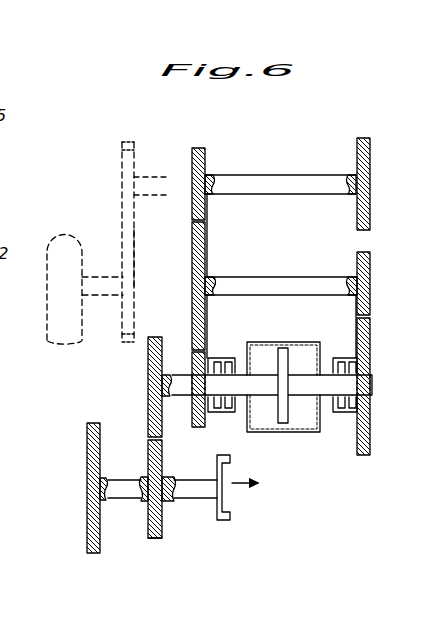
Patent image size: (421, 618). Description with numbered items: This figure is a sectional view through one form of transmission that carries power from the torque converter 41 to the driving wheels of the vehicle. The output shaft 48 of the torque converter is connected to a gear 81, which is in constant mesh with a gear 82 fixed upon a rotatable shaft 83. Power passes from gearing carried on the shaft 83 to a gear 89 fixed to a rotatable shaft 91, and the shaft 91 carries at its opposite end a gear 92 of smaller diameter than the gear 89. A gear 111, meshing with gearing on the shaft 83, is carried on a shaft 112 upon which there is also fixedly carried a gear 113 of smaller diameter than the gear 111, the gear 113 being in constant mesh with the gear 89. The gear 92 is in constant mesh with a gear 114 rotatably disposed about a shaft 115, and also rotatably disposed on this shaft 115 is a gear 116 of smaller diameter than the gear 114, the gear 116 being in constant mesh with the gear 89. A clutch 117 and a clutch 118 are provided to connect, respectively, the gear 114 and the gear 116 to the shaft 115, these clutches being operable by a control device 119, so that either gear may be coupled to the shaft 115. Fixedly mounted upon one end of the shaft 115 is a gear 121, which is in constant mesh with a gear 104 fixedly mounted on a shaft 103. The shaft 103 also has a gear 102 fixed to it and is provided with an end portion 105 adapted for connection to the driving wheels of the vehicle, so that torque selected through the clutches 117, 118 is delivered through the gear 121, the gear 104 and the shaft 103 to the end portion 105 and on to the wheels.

The torque converter 41 is at (67, 231).
The output shaft 48 is at (102, 301).
The gear 81 is at (136, 256).
The gear 82 is at (119, 148).
The rotatable shaft 83 is at (153, 175).
The gear 89 is at (207, 240).
The rotatable shaft 91 is at (284, 280).
The gear 92 is at (370, 263).
The gear 102 is at (88, 529).
The shaft 103 is at (189, 490).
The gear 104 is at (158, 540).
The end portion 105 is at (226, 522).
The gear 111 is at (370, 155).
The shaft 112 is at (284, 178).
The gear 113 is at (201, 147).
The gear 114 is at (362, 456).
The shaft 115 is at (305, 396).
The gear 116 is at (196, 429).
The clutch 117 is at (351, 356).
The clutch 118 is at (219, 356).
The control device 119 is at (266, 343).
The gear 121 is at (148, 376).